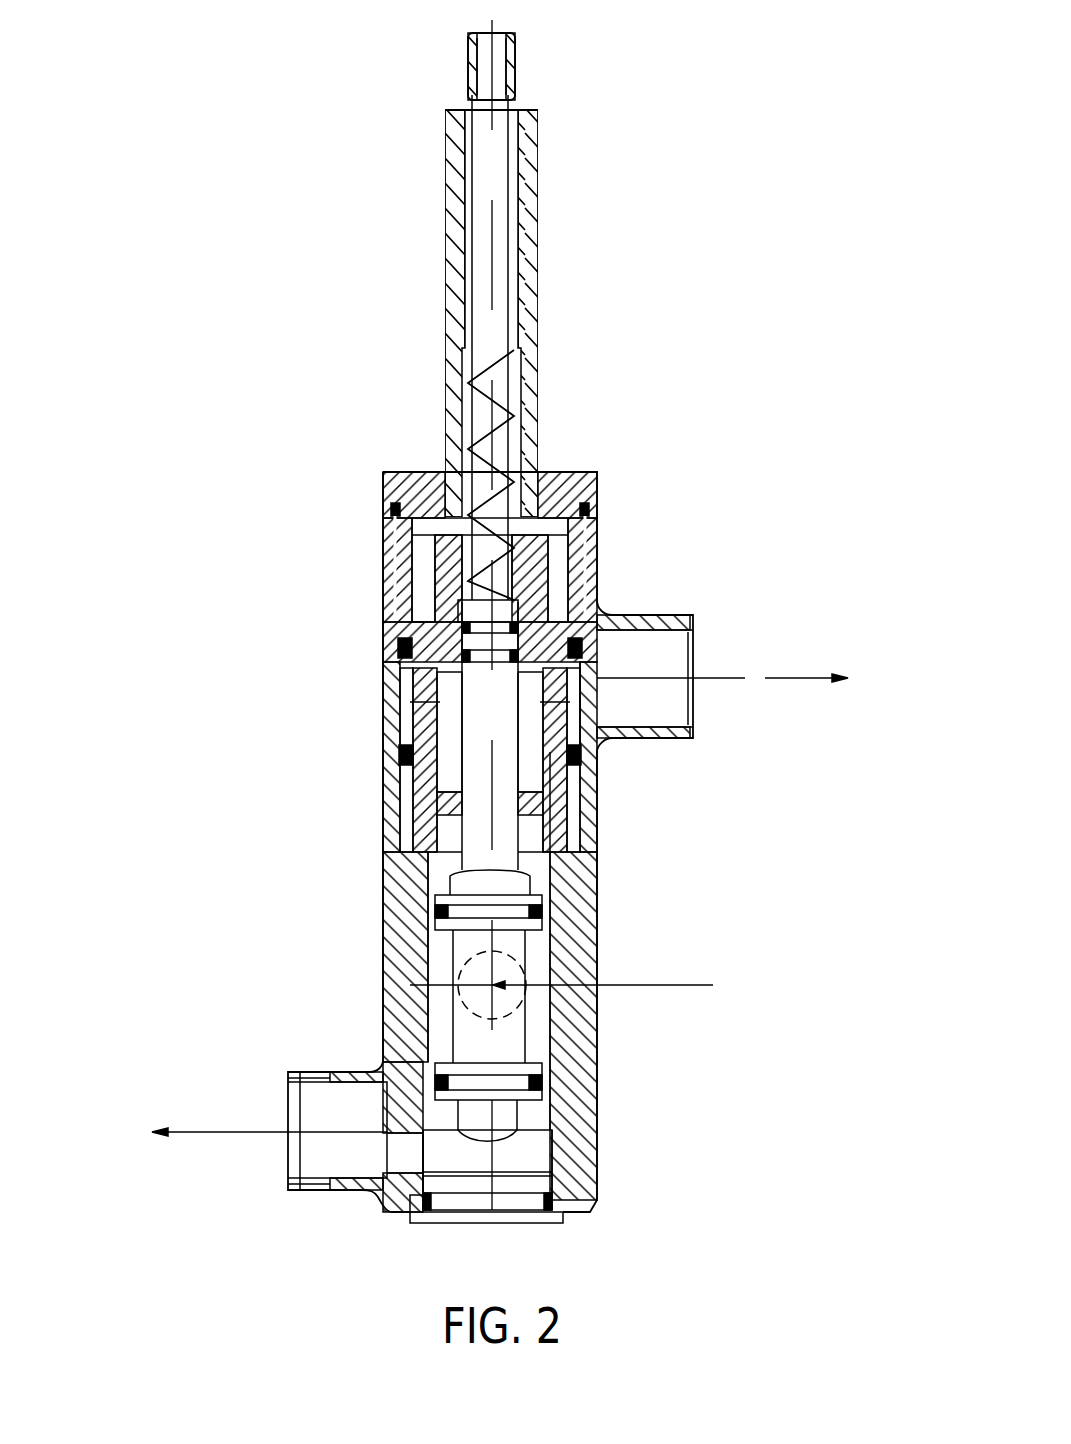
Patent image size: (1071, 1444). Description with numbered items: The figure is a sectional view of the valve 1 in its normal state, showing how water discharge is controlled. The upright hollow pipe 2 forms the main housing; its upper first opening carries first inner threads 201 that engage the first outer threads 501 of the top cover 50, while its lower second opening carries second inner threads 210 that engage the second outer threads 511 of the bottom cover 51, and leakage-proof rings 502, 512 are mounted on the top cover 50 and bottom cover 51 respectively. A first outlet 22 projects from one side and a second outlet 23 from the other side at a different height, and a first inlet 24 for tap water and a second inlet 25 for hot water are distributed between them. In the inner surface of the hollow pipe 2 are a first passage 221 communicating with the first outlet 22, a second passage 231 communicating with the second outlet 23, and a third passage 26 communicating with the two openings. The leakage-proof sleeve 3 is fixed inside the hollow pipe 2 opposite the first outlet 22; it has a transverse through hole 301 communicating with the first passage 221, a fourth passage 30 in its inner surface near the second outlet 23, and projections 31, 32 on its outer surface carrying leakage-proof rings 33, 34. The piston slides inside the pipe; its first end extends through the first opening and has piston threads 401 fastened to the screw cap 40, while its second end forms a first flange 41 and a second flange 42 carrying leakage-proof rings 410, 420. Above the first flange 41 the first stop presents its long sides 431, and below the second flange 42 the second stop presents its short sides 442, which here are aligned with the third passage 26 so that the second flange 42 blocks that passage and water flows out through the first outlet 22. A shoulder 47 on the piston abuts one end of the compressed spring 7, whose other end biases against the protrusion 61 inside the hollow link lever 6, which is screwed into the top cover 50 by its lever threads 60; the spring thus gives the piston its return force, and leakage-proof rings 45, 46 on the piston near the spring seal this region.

The valve 1 is at (226, 36).
The hollow pipe 2 is at (375, 858).
The leakage-proof sleeve 3 is at (383, 612).
The link lever 6 is at (432, 186).
The compressed spring 7 is at (468, 410).
The first outlet 22 is at (690, 617).
The second outlet 23 is at (310, 1160).
The first inlet 24 is at (597, 995).
The second inlet 25 is at (618, 1026).
The third passage 26 is at (555, 1141).
The fourth passage 30 is at (405, 916).
The projection 31 is at (397, 646).
The projection 32 is at (397, 752).
The leakage-proof ring 33 is at (420, 682).
The leakage-proof ring 34 is at (413, 792).
The screw cap 40 is at (517, 57).
The first flange 41 is at (440, 976).
The second flange 42 is at (440, 1026).
The leakage-proof ring 45 is at (383, 482).
The leakage-proof ring 46 is at (435, 557).
The shoulder 47 is at (597, 554).
The top cover 50 is at (585, 470).
The bottom cover 51 is at (565, 1226).
The lever threads 60 is at (445, 251).
The protrusion 61 is at (465, 342).
The first inner threads 201 is at (392, 512).
The second inner threads 210 is at (418, 1212).
The first passage 221 is at (597, 696).
The second passage 231 is at (395, 1157).
The through hole 301 is at (597, 755).
The piston threads 401 is at (512, 66).
The leakage-proof ring 410 is at (437, 913).
The leakage-proof ring 420 is at (437, 1081).
The long sides 431 is at (505, 884).
The short sides 442 is at (510, 1116).
The first outer threads 501 is at (597, 524).
The leakage-proof ring 502 is at (597, 478).
The second outer threads 511 is at (555, 1178).
The leakage-proof ring 512 is at (470, 1219).